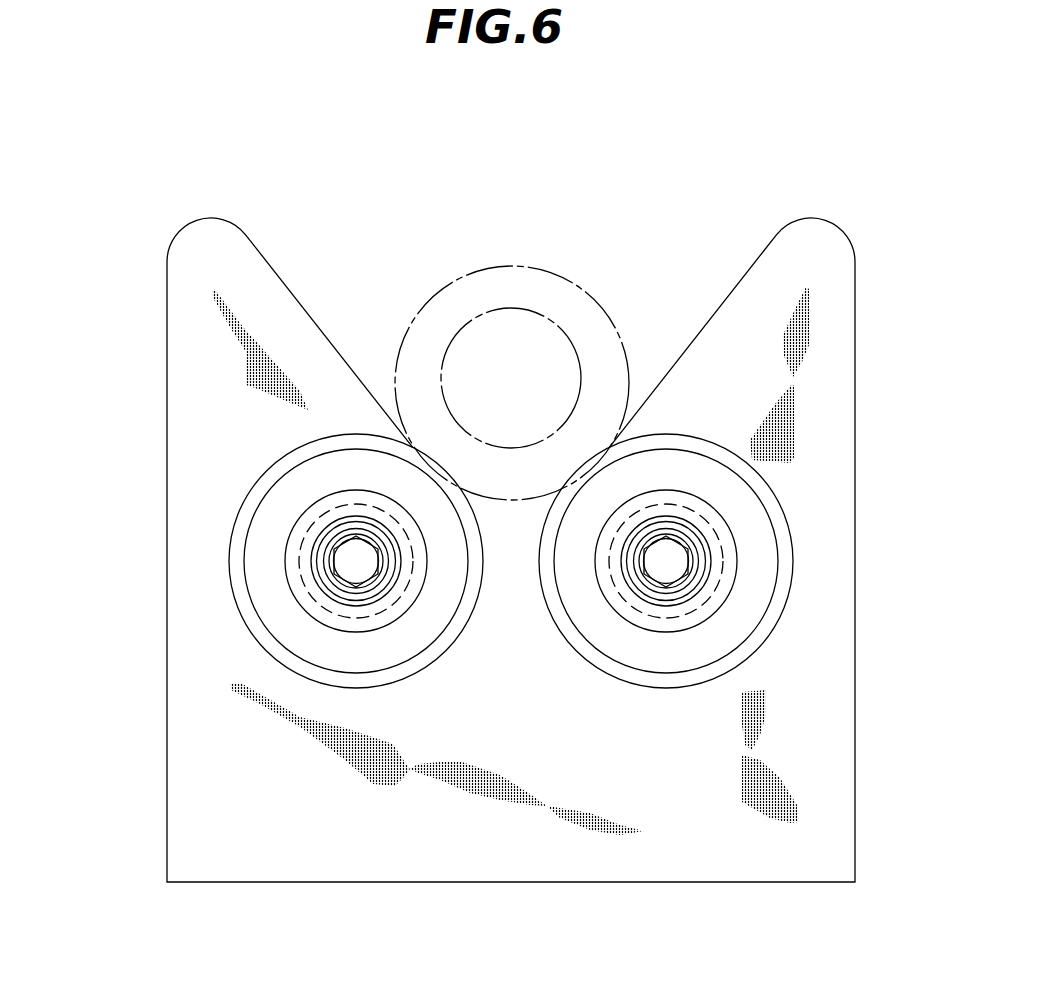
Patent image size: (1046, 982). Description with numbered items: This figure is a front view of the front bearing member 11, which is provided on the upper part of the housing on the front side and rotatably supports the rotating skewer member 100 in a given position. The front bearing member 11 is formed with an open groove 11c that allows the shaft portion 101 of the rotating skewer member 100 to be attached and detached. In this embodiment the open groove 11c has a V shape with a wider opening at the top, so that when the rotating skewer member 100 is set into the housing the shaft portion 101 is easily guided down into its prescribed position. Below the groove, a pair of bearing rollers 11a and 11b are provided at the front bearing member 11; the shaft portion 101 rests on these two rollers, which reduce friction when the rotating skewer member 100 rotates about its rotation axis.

The front bearing member 11 is at (205, 370).
The bearing roller 11a is at (760, 538).
The bearing roller 11b is at (263, 587).
The open groove 11c is at (660, 199).
The rotating skewer member 100 is at (493, 264).
The shaft portion 101 is at (512, 314).